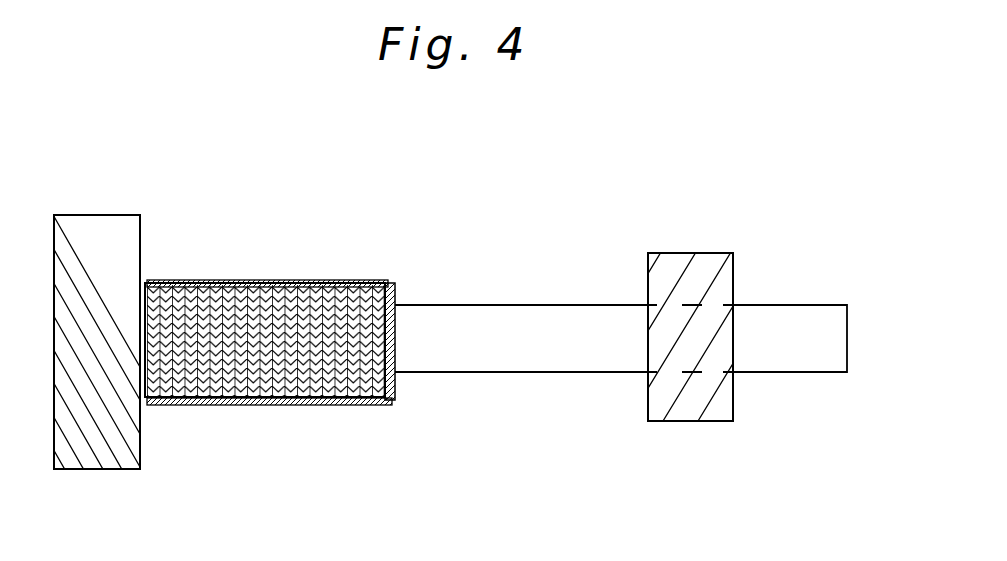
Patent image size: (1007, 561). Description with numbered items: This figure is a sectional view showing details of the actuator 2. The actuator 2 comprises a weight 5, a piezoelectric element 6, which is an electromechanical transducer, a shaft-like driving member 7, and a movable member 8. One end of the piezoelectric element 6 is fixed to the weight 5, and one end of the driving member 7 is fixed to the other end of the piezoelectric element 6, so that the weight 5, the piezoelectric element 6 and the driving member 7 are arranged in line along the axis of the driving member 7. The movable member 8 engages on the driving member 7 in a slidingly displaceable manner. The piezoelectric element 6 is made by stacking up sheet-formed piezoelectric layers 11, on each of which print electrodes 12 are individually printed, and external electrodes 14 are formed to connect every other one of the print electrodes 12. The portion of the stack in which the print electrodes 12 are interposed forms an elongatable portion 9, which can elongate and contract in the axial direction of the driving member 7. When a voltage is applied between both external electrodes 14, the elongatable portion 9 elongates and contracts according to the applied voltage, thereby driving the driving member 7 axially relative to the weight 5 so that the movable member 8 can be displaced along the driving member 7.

The actuator 2 is at (447, 211).
The weight 5 is at (92, 215).
The piezoelectric element 6 is at (240, 276).
The driving member 7 is at (525, 305).
The movable member 8 is at (688, 253).
The elongatable portion 9 is at (375, 276).
The piezoelectric layer 11 is at (370, 282).
The print electrode 12 is at (217, 283).
The external electrode 14 is at (280, 280).